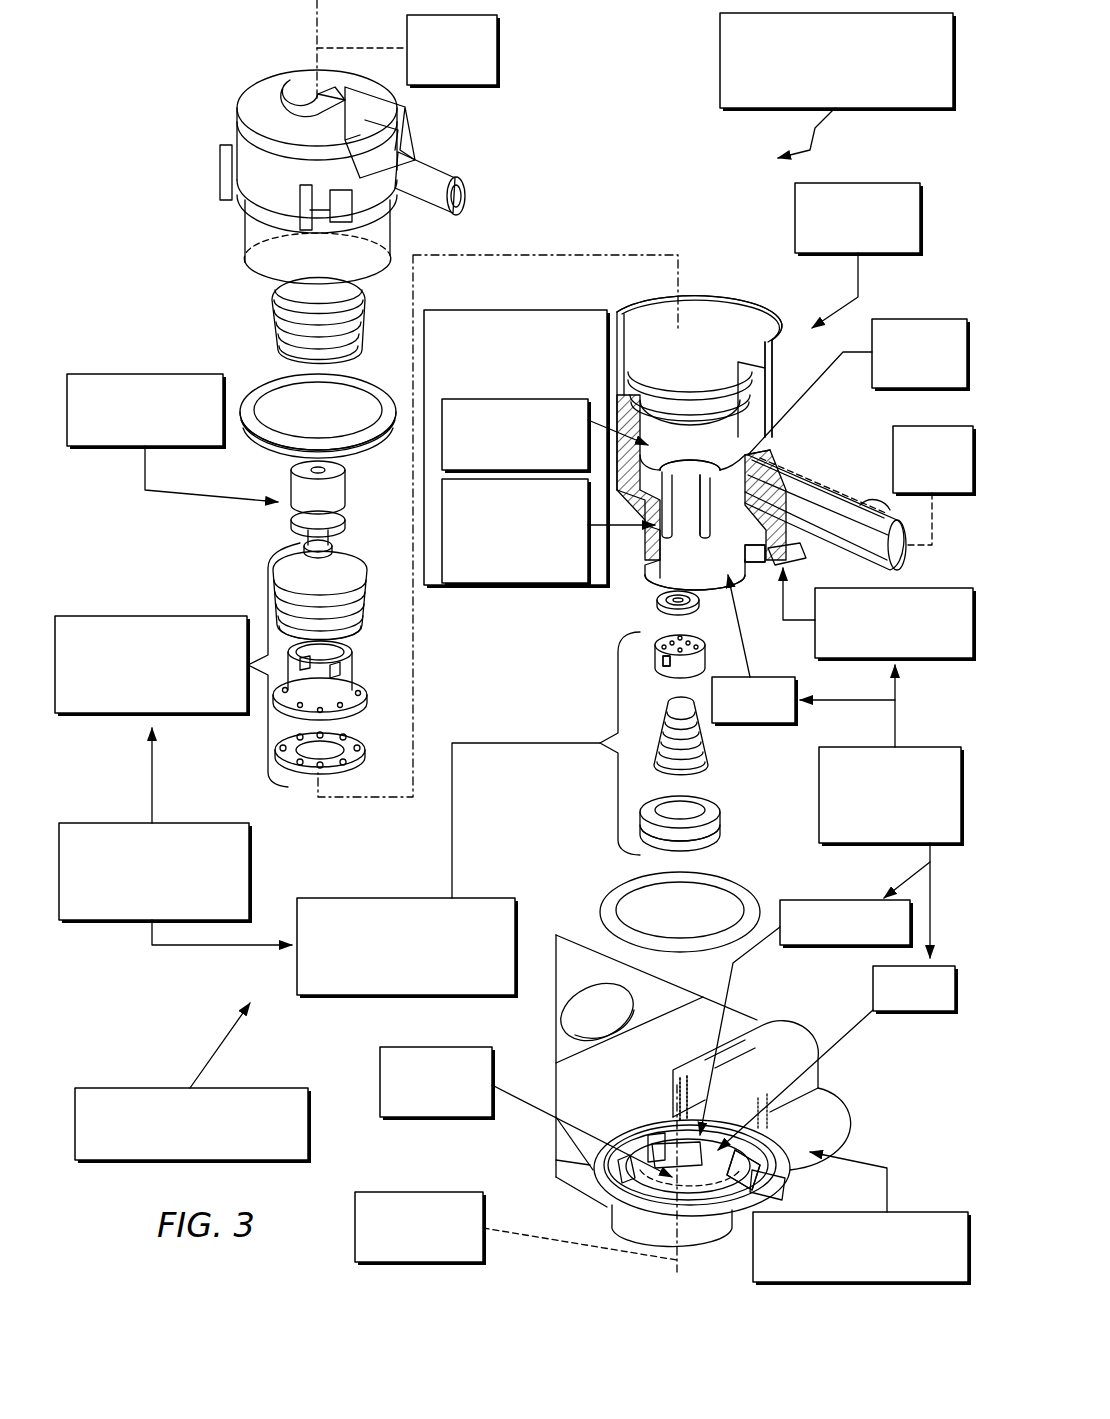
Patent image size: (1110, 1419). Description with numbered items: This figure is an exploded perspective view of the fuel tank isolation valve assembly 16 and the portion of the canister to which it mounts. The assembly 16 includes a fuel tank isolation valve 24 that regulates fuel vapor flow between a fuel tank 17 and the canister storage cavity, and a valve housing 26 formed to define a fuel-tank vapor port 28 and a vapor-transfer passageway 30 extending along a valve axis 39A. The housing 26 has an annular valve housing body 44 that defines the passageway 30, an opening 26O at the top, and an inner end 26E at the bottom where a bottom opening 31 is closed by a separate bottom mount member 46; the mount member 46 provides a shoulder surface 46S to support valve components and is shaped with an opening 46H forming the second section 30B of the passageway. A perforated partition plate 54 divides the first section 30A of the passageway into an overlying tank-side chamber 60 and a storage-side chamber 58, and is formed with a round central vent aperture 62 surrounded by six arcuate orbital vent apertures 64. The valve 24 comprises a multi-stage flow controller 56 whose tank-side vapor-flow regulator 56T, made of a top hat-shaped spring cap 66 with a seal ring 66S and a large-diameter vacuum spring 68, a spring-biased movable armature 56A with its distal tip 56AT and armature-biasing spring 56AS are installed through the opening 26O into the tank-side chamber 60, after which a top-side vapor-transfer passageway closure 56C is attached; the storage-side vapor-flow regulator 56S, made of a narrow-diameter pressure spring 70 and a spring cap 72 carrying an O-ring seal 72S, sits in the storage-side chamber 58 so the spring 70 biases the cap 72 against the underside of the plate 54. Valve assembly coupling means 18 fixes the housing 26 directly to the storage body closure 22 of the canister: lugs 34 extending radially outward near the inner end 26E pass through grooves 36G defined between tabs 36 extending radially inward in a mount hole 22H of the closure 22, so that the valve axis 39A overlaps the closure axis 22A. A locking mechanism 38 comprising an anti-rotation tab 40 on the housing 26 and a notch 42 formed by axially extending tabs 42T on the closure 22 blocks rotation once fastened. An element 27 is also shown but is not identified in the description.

The fuel tank isolation valve assembly 16 is at (720, 32).
The fuel tank 17 is at (893, 445).
The valve assembly coupling means 18 is at (915, 747).
The storage body closure 22 is at (945, 1212).
The closure axis 22A is at (380, 1192).
The mount hole 22H is at (380, 1075).
The fuel tank isolation valve 24 is at (140, 1088).
The valve housing 26 is at (875, 183).
The opening 26O is at (705, 293).
The inner end 26E is at (650, 565).
The seal ring 27 is at (592, 893).
The fuel-tank vapor port 28 is at (915, 302).
The vapor-transfer passageway 30 is at (492, 310).
The first section of vapor-transfer passageway 30A is at (640, 342).
The second section of vapor-transfer passageway 30B is at (693, 803).
The bottom opening 31 is at (663, 603).
The lugs 34 is at (768, 677).
The tabs 36 is at (873, 985).
The grooves 36G is at (817, 900).
The locking mechanism 38 is at (925, 588).
The valve axis 39A is at (497, 50).
The anti-rotation tab 40 is at (757, 565).
The notch 42 is at (795, 1115).
The tabs 42T is at (722, 1200).
The valve housing body 44 is at (775, 300).
The bottom mount member 46 is at (814, 468).
The opening 46H is at (664, 798).
The shoulder surface 46S is at (720, 836).
The perforated partition plate 54 is at (666, 432).
The multi-stage flow controller 56 is at (190, 823).
The movable armature 56A is at (145, 374).
The armature-biasing spring 56AS is at (258, 296).
The distal tip 56AT is at (305, 543).
The top-side vapor-transfer passageway closure 56C is at (236, 81).
The storage-side vapor-flow regulator 56S is at (375, 898).
The tank-side vapor-flow regulator 56T is at (150, 616).
The storage-side chamber 58 is at (500, 586).
The tank-side chamber 60 is at (442, 408).
The central vent aperture 62 is at (695, 452).
The orbital vent apertures 64 is at (752, 485).
The top hat-shaped spring cap 66 is at (356, 648).
The seal ring 66S is at (357, 727).
The large-diameter compression spring 68 is at (352, 560).
The narrow-diameter compression spring 70 is at (712, 740).
The spring cap 72 is at (650, 657).
The O-ring seal 72S is at (705, 616).